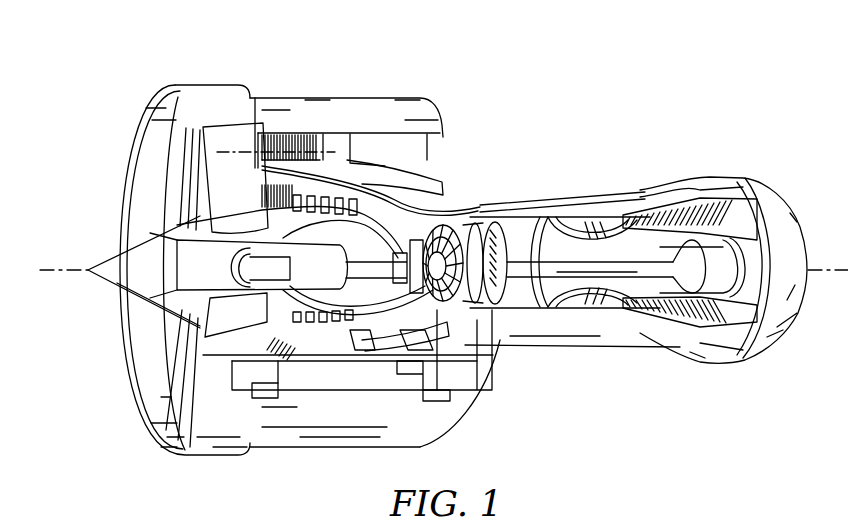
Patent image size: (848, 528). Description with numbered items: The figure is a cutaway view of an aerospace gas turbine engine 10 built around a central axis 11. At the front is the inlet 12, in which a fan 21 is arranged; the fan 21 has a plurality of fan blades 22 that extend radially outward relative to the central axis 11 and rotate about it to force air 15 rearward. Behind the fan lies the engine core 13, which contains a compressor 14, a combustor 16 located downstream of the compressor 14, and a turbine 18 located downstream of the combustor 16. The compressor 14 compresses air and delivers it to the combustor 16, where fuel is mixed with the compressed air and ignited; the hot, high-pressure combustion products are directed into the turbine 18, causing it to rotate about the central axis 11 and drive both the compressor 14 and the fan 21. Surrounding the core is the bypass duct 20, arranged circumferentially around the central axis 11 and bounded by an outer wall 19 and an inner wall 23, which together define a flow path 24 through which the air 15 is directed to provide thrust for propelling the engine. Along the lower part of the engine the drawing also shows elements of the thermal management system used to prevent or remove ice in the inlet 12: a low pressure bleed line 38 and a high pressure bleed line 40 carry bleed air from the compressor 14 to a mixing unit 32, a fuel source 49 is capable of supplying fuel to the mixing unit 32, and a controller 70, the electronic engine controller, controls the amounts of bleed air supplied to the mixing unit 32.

The gas turbine engine 10 is at (694, 78).
The central axis 11 is at (53, 262).
The inlet 12 is at (126, 160).
The engine core 13 is at (445, 160).
The compressor 14 is at (466, 208).
The air 15 is at (307, 153).
The combustor 16 is at (573, 200).
The turbine 18 is at (719, 180).
The outer wall 19 is at (375, 113).
The bypass duct 20 is at (314, 108).
The fan 21 is at (176, 126).
The fan blades 22 is at (242, 162).
The inner wall 23 is at (318, 172).
The flow path 24 is at (366, 128).
The mixing unit 32 is at (420, 400).
The low pressure bleed line 38 is at (437, 360).
The high pressure bleed line 40 is at (493, 357).
The fuel source 49 is at (397, 364).
The controller 70 is at (276, 398).